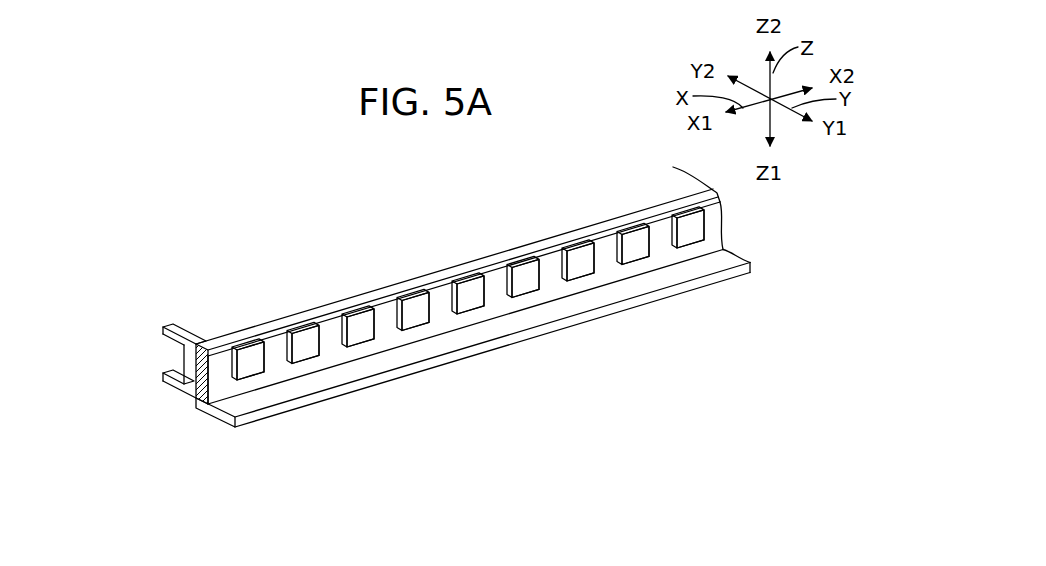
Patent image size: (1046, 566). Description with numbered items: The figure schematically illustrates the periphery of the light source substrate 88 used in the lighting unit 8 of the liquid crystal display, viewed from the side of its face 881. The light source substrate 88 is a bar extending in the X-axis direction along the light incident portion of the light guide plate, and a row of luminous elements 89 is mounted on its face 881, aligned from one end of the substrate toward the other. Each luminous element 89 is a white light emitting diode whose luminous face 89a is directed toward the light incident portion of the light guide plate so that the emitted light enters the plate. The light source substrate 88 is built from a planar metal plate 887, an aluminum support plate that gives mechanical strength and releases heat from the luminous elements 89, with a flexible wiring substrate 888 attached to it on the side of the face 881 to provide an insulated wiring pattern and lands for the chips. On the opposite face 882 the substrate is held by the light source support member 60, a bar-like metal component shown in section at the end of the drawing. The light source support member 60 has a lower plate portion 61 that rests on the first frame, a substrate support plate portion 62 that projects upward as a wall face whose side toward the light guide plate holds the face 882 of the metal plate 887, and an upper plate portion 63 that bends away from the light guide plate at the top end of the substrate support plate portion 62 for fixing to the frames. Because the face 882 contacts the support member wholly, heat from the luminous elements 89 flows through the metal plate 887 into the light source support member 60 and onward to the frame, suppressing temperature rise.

The lighting unit 8 is at (300, 149).
The light source support member 60 is at (160, 330).
The lower plate portion 61 is at (168, 386).
The substrate support plate portion 62 is at (181, 378).
The upper plate portion 63 is at (172, 327).
The light source substrate 88 is at (293, 210).
The metal plate 887 is at (347, 298).
The flexible wiring substrate 888 is at (395, 285).
The face 881 is at (437, 290).
The face 882 is at (202, 406).
The luminous element 89 is at (250, 343).
The luminous face 89a is at (305, 352).